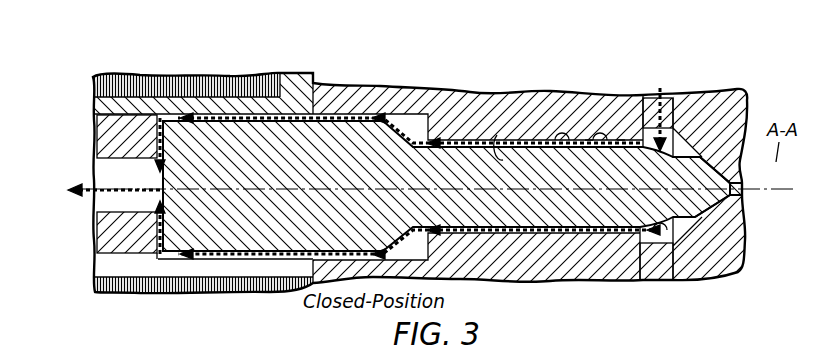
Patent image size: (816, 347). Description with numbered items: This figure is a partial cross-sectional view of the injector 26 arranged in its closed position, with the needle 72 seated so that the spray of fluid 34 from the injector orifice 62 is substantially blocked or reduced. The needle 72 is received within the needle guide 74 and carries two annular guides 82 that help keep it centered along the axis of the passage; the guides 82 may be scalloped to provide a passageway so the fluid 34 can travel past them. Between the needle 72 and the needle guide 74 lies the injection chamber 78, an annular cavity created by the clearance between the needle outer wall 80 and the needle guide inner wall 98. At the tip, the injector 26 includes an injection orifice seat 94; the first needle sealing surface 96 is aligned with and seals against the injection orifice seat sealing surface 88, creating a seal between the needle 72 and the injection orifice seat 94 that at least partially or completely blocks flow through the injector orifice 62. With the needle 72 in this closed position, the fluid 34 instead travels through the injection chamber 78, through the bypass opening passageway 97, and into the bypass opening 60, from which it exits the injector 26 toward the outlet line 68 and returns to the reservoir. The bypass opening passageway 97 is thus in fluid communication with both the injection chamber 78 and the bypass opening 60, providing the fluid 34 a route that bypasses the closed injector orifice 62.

The injector 26 is at (186, 63).
The fluid 34 is at (206, 272).
The bypass opening 60 is at (153, 168).
The injector orifice 62 is at (753, 180).
The outlet line 68 is at (89, 190).
The needle 72 is at (330, 162).
The needle guide 74 is at (454, 97).
The injection chamber 78 is at (589, 150).
The needle outer wall 80 is at (497, 152).
The annular guide 82 is at (589, 147).
The injection orifice seat sealing surface 88 is at (703, 127).
The injection orifice seat 94 is at (725, 208).
The first needle sealing surface 96 is at (708, 162).
The bypass opening passageway 97 is at (160, 234).
The needle guide inner wall 98 is at (621, 147).